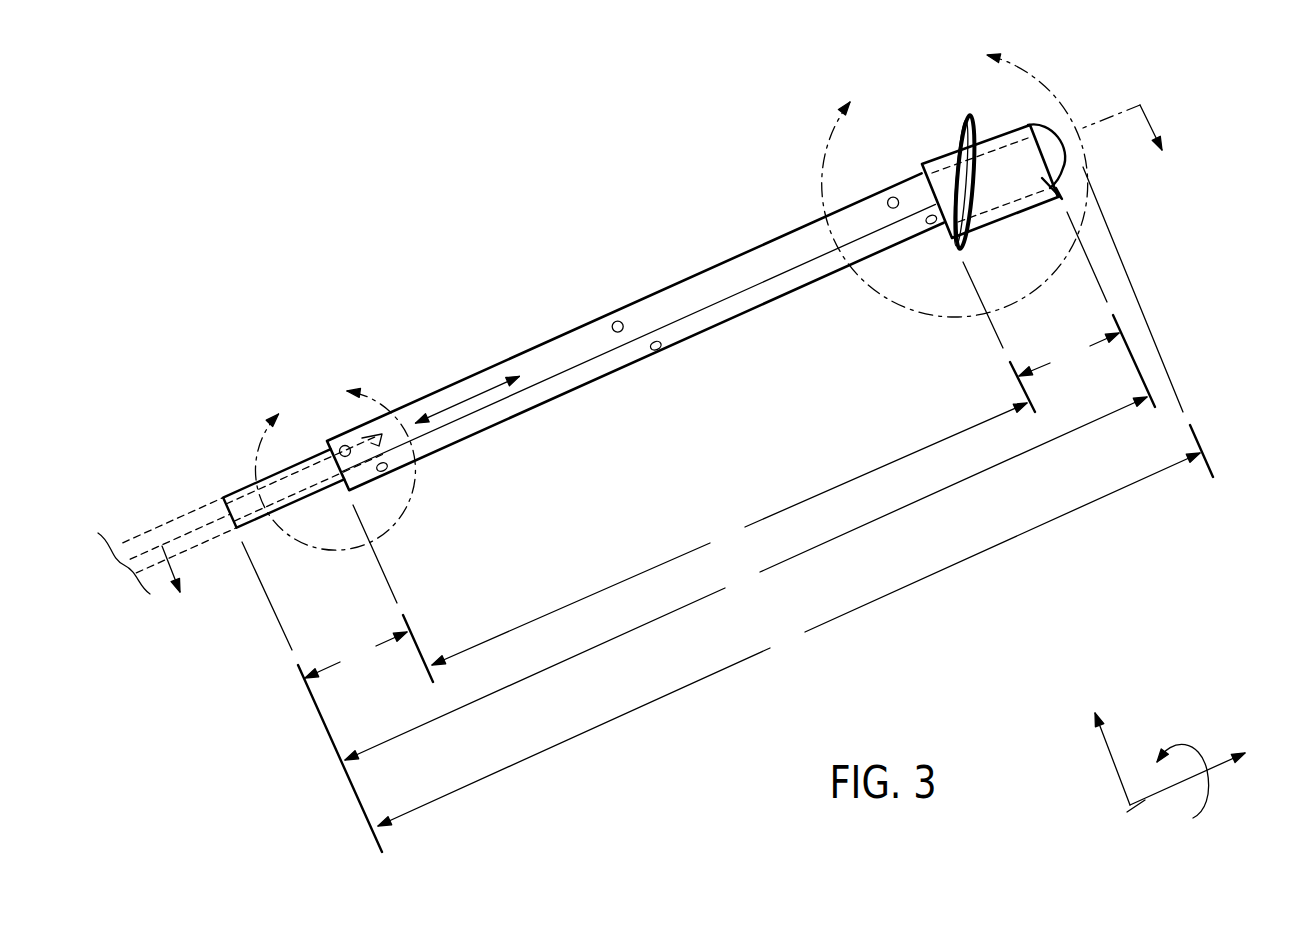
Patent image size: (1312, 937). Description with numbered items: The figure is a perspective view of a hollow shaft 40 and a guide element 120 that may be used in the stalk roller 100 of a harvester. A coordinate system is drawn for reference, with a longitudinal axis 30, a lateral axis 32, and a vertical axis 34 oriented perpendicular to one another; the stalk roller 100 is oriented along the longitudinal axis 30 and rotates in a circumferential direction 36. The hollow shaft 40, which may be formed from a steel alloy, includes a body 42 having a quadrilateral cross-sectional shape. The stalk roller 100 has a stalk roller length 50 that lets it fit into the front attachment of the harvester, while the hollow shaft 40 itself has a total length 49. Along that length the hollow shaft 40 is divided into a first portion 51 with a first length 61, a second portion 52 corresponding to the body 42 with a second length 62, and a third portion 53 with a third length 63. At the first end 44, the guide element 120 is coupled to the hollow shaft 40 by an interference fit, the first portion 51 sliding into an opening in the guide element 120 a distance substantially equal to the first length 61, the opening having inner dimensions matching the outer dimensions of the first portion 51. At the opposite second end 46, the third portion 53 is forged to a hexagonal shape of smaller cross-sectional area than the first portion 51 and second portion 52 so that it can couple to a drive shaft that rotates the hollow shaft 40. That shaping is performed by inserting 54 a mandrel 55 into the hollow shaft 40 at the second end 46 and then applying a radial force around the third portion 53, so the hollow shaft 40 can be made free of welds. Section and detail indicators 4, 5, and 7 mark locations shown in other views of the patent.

The stalk roller 100 is at (480, 265).
The hollow shaft 40 is at (740, 343).
The body 42 is at (705, 288).
The first end 44 is at (1030, 125).
The second end 46 is at (222, 498).
The total length 49 is at (750, 486).
The stalk roller length 50 is at (727, 509).
The first portion 51 is at (1009, 208).
The second portion 52 is at (607, 367).
The third portion 53 is at (246, 492).
The inserting 54 is at (467, 398).
The mandrel 55 is at (380, 433).
The first length 61 is at (1069, 354).
The second length 62 is at (694, 472).
The third length 63 is at (356, 655).
The guide element 120 is at (1025, 158).
The section line 4- 4 is at (666, 366).
The detail circle 5 is at (335, 452).
The detail circle 7 is at (955, 172).
The longitudinal axis 30 is at (1220, 768).
The lateral axis 32 is at (1132, 810).
The vertical axis 34 is at (1112, 755).
The circumferential direction 36 is at (1187, 748).